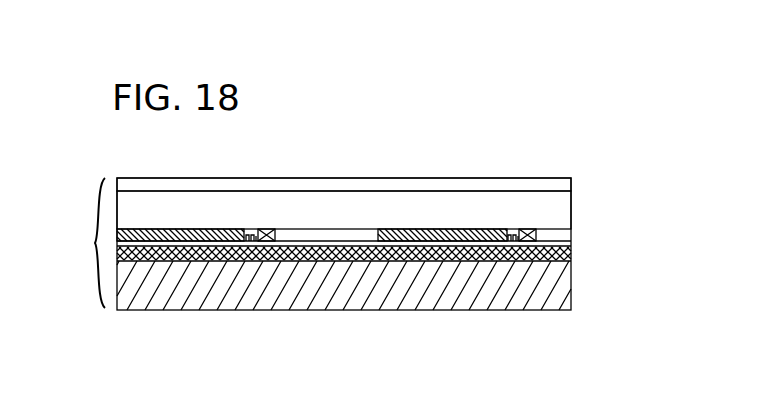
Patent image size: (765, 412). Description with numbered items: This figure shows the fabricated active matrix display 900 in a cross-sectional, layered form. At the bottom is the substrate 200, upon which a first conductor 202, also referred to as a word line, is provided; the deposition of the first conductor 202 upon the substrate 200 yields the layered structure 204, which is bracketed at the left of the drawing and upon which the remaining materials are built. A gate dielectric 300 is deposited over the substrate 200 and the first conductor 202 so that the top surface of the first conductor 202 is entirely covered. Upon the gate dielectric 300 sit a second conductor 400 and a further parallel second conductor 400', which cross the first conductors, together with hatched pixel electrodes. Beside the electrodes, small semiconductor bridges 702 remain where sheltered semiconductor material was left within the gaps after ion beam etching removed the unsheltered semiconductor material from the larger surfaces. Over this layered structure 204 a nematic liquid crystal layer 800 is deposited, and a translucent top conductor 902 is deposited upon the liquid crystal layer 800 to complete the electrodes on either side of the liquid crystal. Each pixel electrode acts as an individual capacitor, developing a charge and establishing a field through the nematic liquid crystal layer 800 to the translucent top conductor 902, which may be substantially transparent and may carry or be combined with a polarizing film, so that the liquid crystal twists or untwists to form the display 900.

The active matrix display 900 is at (518, 142).
The translucent top conductor 902 is at (563, 186).
The nematic liquid crystal layer 800 is at (562, 201).
The second conductor 400 is at (380, 237).
The second conductor 400' is at (397, 217).
The semiconductor bridge 702 is at (250, 233).
The gate dielectric 300 is at (572, 252).
The first conductor 202 is at (572, 259).
The substrate 200 is at (343, 292).
The layered structure 204 is at (77, 243).